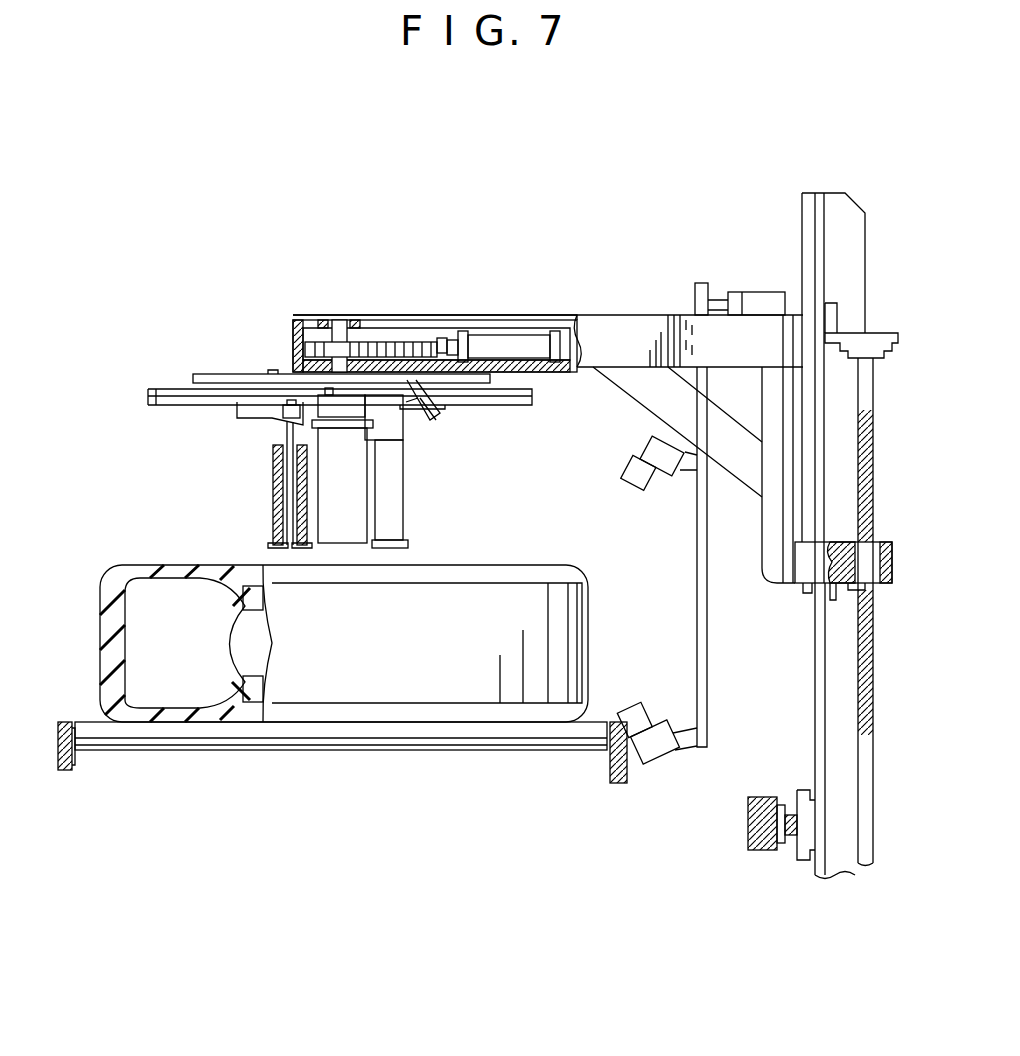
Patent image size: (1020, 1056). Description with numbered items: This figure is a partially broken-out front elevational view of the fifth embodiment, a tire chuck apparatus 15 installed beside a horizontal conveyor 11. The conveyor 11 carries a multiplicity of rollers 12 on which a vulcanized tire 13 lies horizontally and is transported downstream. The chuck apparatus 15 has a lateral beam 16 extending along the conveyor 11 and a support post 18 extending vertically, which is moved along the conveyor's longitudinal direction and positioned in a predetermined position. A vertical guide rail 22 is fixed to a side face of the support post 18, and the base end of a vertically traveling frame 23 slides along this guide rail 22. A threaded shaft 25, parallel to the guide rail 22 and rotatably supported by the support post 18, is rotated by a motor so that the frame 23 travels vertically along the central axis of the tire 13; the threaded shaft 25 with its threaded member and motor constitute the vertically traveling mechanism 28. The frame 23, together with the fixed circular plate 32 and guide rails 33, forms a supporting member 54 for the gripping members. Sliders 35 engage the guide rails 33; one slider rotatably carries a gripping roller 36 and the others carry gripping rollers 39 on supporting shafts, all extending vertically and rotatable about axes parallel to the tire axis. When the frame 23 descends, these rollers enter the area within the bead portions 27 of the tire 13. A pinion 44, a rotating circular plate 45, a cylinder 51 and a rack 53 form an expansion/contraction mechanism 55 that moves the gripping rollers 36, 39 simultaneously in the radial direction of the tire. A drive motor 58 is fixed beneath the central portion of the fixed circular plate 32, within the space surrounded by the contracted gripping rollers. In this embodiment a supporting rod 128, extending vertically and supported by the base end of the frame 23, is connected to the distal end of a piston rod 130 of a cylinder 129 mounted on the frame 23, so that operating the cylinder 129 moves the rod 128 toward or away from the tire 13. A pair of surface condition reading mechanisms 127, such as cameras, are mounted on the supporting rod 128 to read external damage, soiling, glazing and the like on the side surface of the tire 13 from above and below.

The conveyor 11 is at (600, 700).
The rollers 12 is at (470, 737).
The vulcanized tire 13 is at (542, 552).
The tire chuck apparatus 15 is at (592, 266).
The lateral beam 16 is at (752, 848).
The support post 18 is at (825, 718).
The guide rail 22 is at (803, 228).
The vertically traveling frame 23 is at (622, 338).
The threaded shaft 25 is at (876, 703).
The bead portions 27 is at (228, 606).
The vertically traveling mechanism 28 is at (878, 318).
The fixed circular plate 32 is at (175, 390).
The guide rails 33 is at (480, 404).
The sliders 35 is at (250, 420).
The gripping roller 36 is at (395, 497).
The gripping rollers 39 is at (275, 496).
The pinion 44 is at (360, 333).
The rotating circular plate 45 is at (240, 374).
The cylinder 51 is at (524, 335).
The rack 53 is at (410, 342).
The supporting member 54 is at (487, 294).
The expansion/contraction mechanism 55 is at (392, 298).
The drive motor 58 is at (355, 542).
The surface condition reading mechanism 127 is at (640, 452).
The supporting rod 128 is at (707, 610).
The cylinder 129 is at (758, 292).
The piston rod 130 is at (700, 283).